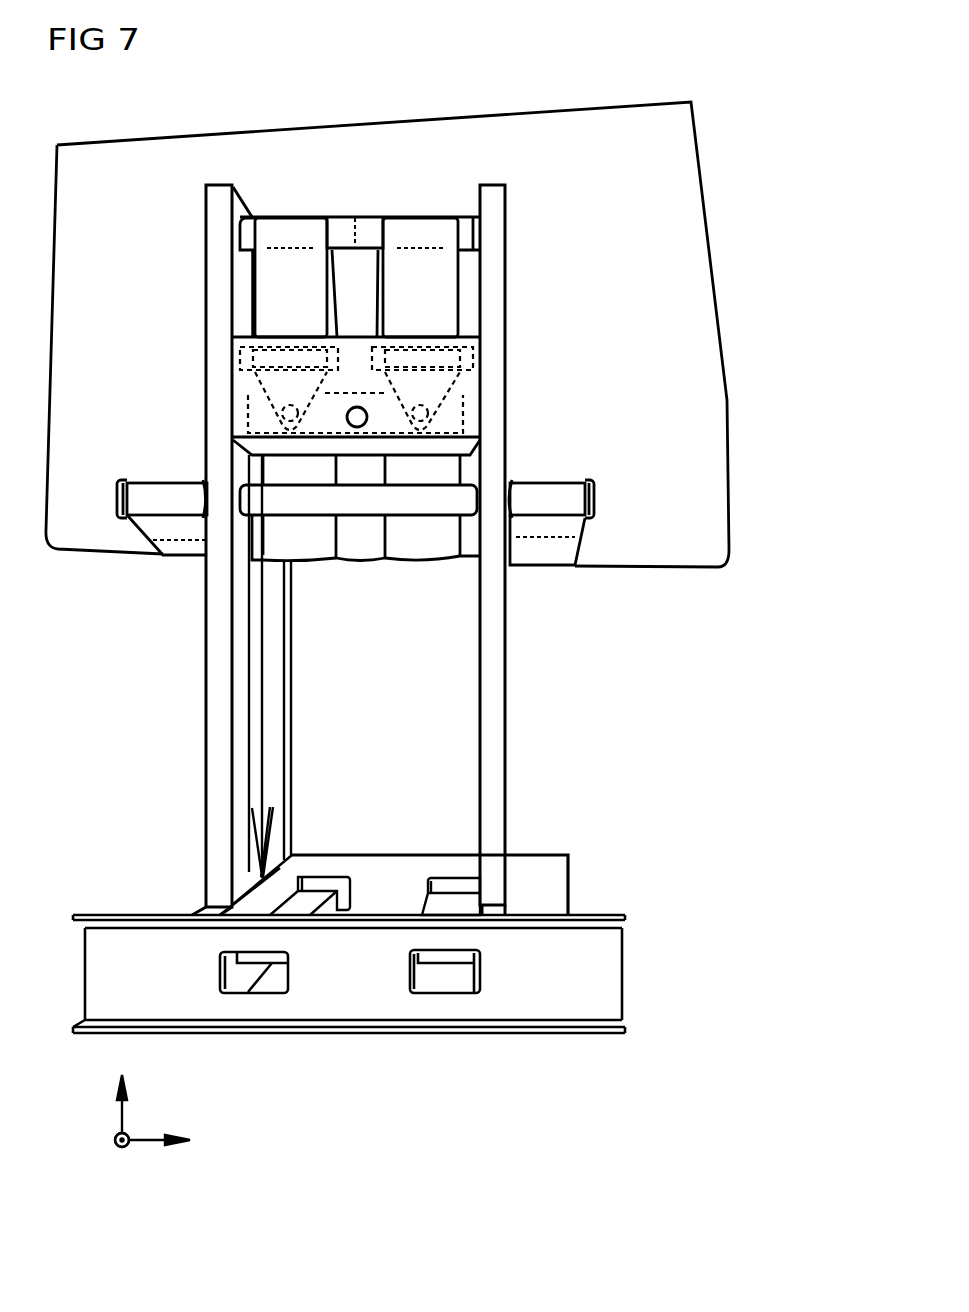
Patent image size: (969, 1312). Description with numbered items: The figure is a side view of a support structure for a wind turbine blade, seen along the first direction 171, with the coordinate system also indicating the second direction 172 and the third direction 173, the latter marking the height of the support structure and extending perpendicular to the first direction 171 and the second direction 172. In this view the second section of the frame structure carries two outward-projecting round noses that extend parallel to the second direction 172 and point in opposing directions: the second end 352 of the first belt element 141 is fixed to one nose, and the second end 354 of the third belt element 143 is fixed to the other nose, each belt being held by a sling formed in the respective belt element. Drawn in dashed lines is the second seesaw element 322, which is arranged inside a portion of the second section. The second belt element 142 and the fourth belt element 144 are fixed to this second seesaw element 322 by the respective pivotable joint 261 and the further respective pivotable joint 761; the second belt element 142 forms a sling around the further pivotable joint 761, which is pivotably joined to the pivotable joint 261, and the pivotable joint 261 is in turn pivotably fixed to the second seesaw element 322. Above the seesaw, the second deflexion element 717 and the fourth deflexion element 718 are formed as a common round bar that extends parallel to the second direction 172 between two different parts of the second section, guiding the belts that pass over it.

The first belt element 141 is at (540, 555).
The second belt element 142 is at (443, 286).
The third belt element 143 is at (178, 548).
The fourth belt element 144 is at (270, 285).
The first direction 171 is at (115, 1152).
The second direction 172 is at (147, 1143).
The third direction 173 is at (125, 1110).
The pivotable joint 261 is at (282, 381).
The second seesaw element 322 is at (453, 415).
The second end of the first belt element 352 is at (550, 497).
The second end of the third belt element 354 is at (158, 497).
The second deflexion element 717 is at (368, 222).
The fourth deflexion element 718 is at (348, 222).
The further pivotable joint 761 is at (240, 349).